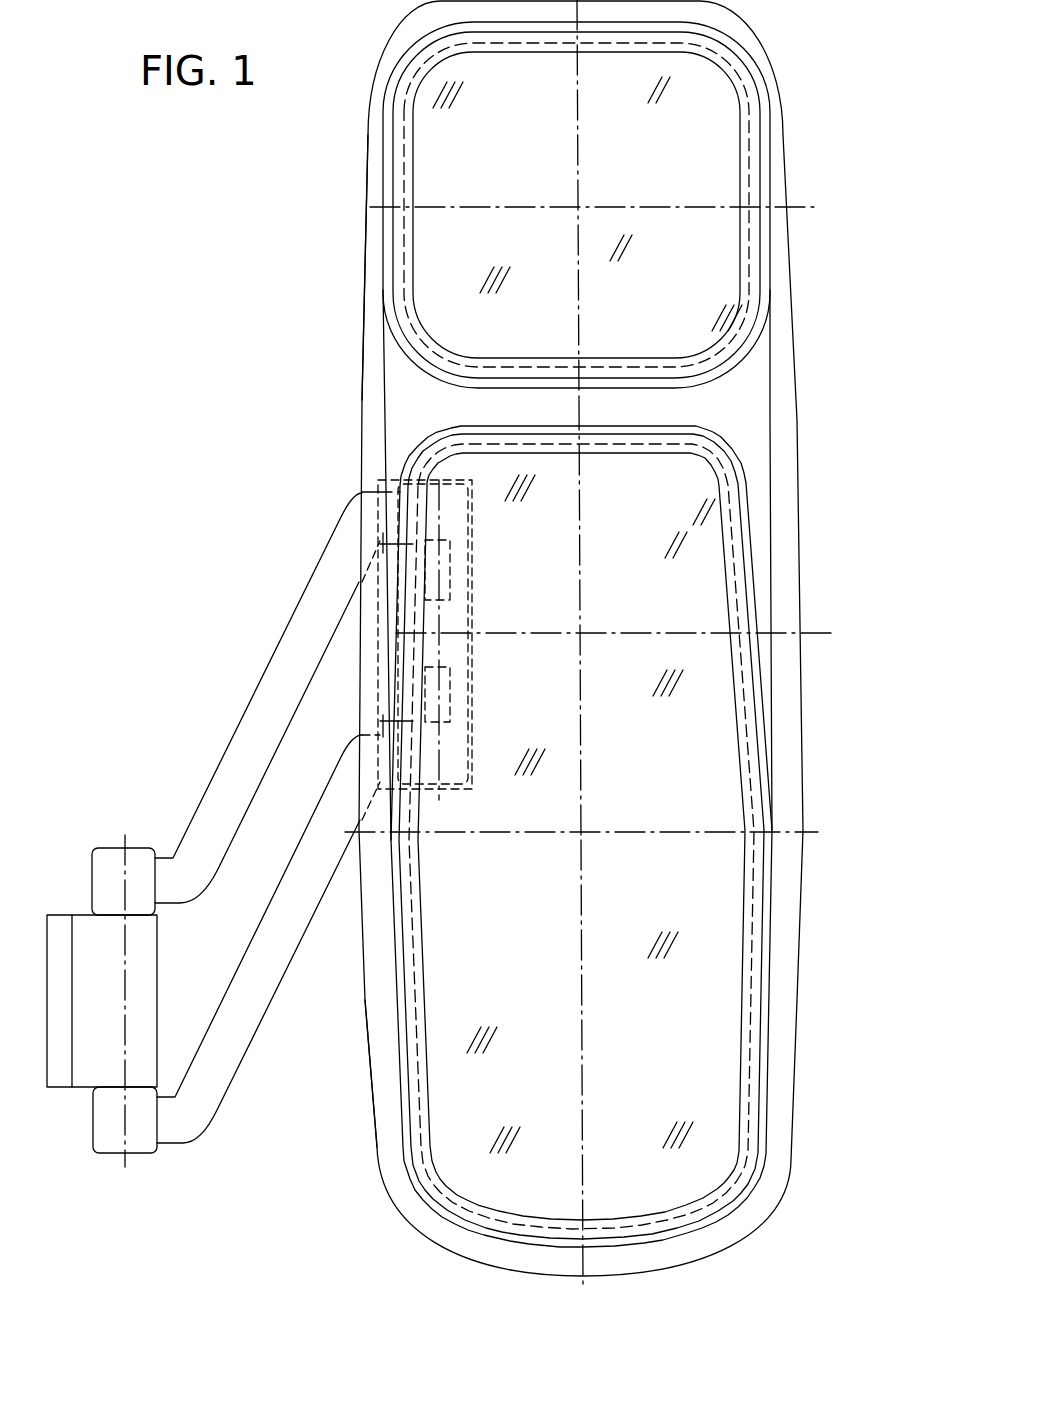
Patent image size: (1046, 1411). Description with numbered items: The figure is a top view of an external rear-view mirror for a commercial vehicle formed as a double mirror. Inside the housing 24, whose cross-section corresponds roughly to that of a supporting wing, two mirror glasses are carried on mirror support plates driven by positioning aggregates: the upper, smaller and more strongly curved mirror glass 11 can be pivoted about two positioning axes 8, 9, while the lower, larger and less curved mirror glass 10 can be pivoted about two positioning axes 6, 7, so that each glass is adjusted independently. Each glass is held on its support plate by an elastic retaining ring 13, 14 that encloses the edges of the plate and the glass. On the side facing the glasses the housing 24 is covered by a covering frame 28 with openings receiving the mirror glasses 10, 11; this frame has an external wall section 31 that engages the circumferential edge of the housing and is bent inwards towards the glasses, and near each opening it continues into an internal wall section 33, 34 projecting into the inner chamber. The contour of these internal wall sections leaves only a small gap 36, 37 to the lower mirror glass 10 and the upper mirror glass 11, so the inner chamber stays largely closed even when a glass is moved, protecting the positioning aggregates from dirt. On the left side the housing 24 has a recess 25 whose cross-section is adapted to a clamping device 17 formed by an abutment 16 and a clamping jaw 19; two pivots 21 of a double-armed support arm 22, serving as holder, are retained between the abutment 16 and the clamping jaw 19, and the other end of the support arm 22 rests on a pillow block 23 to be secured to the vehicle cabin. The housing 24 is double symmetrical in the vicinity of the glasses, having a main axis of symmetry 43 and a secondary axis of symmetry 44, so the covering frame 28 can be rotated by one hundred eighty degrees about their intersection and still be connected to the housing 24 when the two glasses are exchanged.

The positioning axis 6 is at (578, 923).
The positioning axis 7 is at (680, 832).
The positioning axis 8 is at (577, 121).
The positioning axis 9 is at (668, 207).
The mirror glass 10 is at (668, 1067).
The mirror glass 11 is at (672, 301).
The elastic retaining ring 13 is at (748, 683).
The elastic retaining ring 14 is at (748, 133).
The abutment 16 is at (456, 614).
The clamping device 17 is at (471, 666).
The clamping jaw 19 is at (393, 650).
The pivots 21 is at (448, 580).
The double-armed support arm 22 is at (250, 697).
The pillow block 23 is at (82, 913).
The housing 24 is at (359, 385).
The recess 25 is at (396, 484).
The covering frame 28 is at (735, 412).
The external wall section 31 is at (373, 182).
The internal wall section 33 is at (407, 1147).
The internal wall section 34 is at (383, 137).
The gap 36 is at (752, 1115).
The gap 37 is at (760, 267).
The main axis of symmetry 43 is at (580, 571).
The secondary axis of symmetry 44 is at (640, 629).